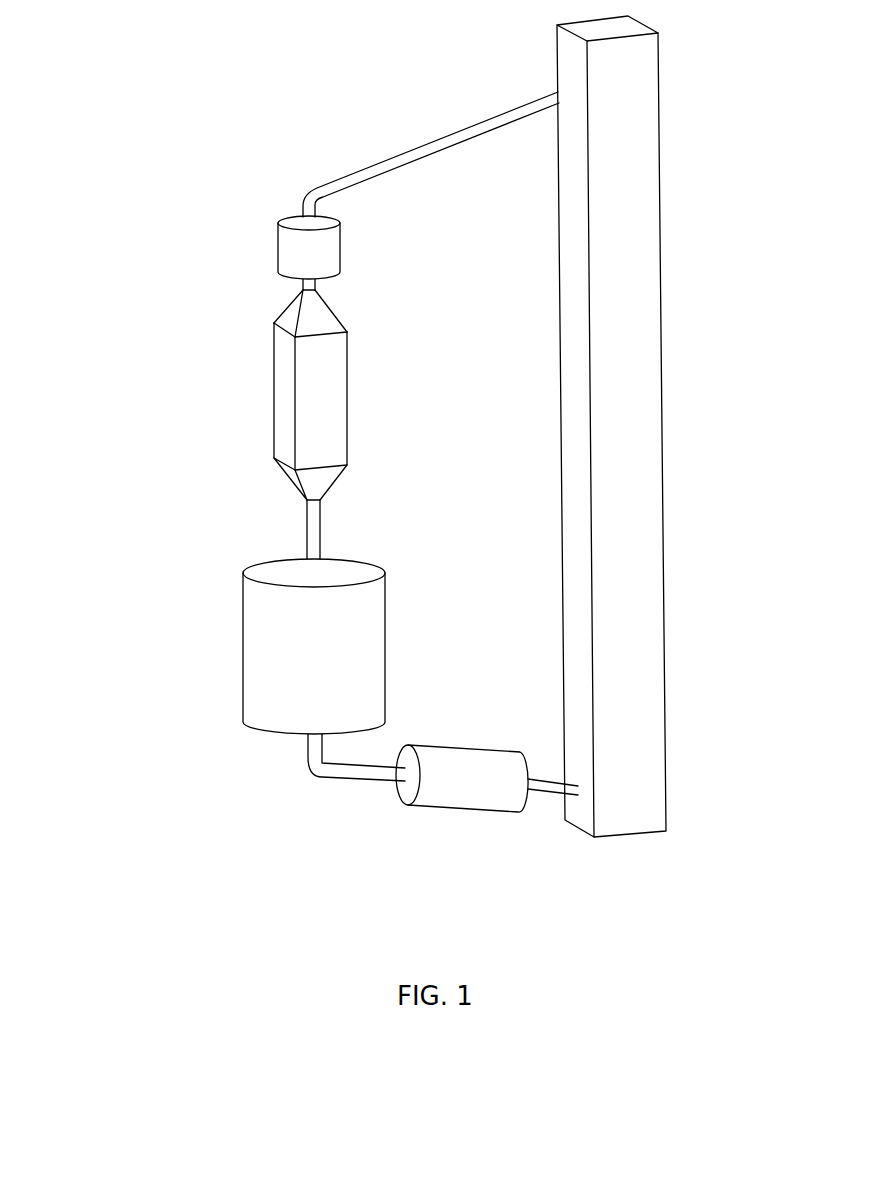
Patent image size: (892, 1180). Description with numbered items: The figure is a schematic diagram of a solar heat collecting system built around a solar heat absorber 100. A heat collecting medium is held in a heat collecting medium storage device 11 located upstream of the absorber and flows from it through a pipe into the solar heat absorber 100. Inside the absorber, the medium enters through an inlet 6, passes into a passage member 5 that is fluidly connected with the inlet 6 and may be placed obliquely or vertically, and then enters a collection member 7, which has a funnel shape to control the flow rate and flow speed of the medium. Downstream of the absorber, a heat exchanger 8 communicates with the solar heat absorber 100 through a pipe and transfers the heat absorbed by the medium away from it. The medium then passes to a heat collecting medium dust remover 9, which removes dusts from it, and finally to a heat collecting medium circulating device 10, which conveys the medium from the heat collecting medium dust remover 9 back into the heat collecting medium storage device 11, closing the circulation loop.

The solar heat absorber 100 is at (352, 405).
The heat collecting medium circulating device 10 is at (640, 238).
The heat collecting medium storage device 11 is at (307, 258).
The inlet 6 is at (297, 312).
The passage member 5 is at (288, 385).
The collection member 7 is at (312, 485).
The heat exchanger 8 is at (318, 680).
The heat collecting medium dust remover 9 is at (480, 777).